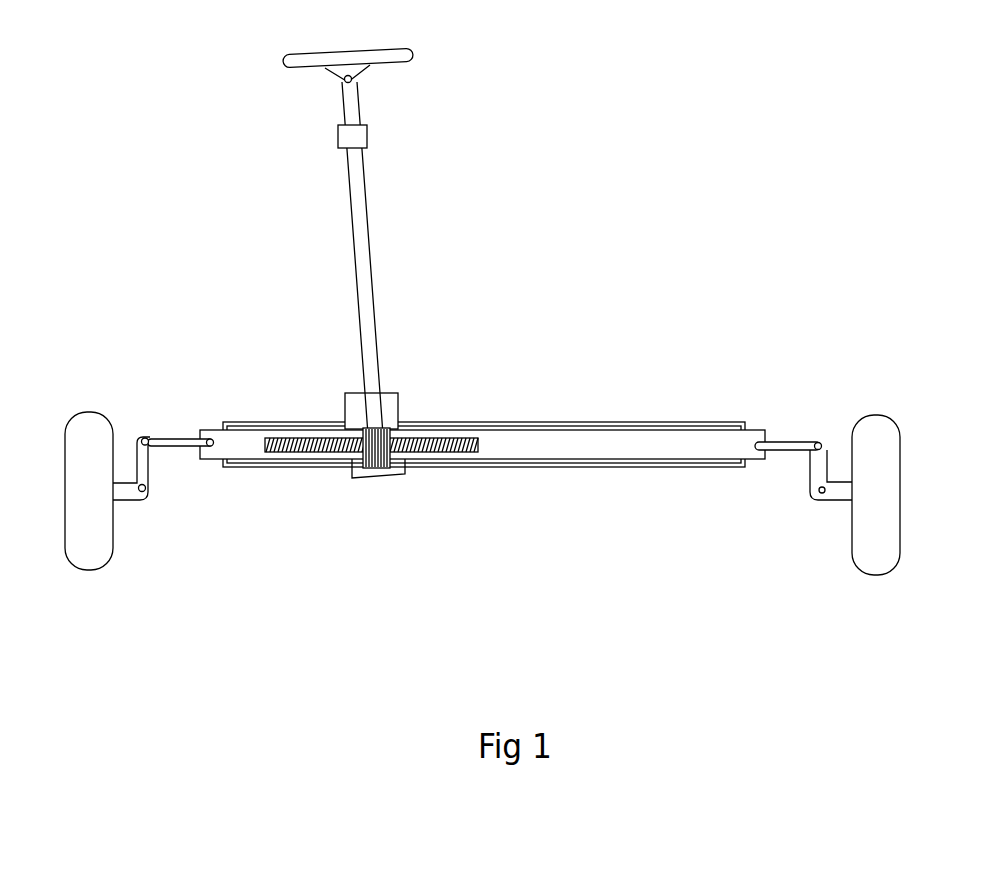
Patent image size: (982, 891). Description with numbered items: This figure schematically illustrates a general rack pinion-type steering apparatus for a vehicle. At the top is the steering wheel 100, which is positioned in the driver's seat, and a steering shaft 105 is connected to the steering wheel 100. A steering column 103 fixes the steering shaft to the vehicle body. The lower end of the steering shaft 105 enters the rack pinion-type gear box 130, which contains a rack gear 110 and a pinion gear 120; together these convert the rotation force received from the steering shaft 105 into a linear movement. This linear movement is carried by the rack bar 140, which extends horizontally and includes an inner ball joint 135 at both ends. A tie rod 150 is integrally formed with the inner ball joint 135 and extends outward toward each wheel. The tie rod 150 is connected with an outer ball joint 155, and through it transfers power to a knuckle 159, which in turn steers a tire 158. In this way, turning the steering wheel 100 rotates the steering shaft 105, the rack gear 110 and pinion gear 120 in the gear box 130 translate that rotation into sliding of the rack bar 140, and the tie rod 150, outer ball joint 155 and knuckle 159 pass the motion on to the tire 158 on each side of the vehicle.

The steering wheel 100 is at (403, 47).
The steering column 103 is at (367, 137).
The steering shaft 105 is at (364, 233).
The rack gear 110 is at (477, 455).
The pinion gear 120 is at (360, 477).
The rack pinion-type gear box 130 is at (399, 406).
The inner ball joint 135 is at (210, 438).
The rack bar 140 is at (640, 450).
The tie rod 150 is at (180, 441).
The outer ball joint 155 is at (143, 437).
The tire 158 is at (73, 418).
The knuckle 159 is at (150, 465).